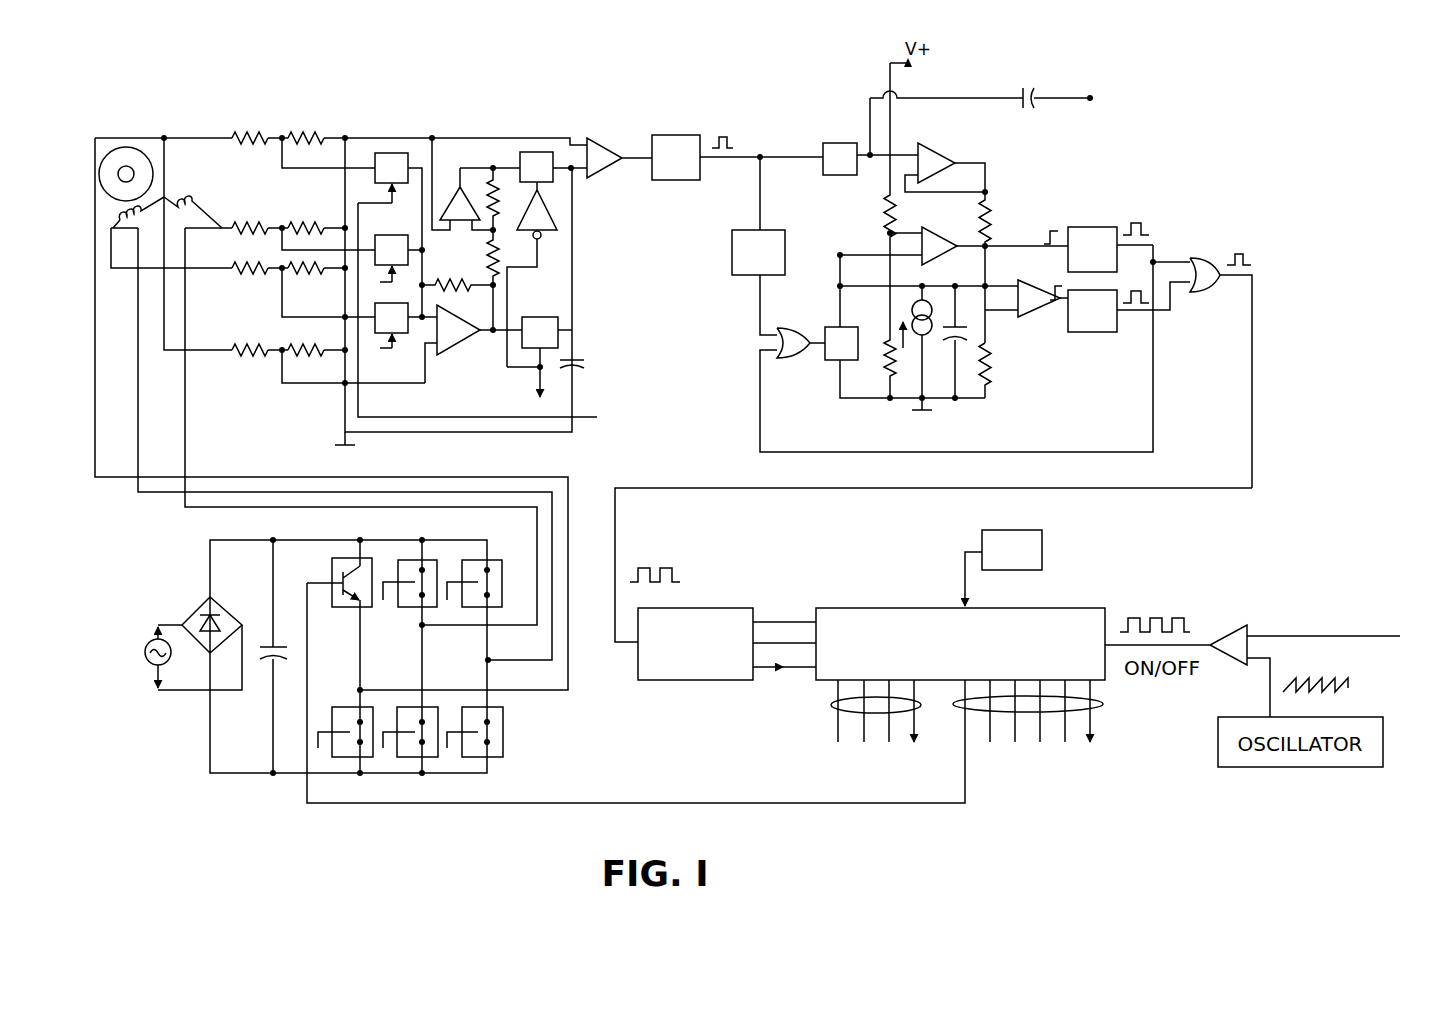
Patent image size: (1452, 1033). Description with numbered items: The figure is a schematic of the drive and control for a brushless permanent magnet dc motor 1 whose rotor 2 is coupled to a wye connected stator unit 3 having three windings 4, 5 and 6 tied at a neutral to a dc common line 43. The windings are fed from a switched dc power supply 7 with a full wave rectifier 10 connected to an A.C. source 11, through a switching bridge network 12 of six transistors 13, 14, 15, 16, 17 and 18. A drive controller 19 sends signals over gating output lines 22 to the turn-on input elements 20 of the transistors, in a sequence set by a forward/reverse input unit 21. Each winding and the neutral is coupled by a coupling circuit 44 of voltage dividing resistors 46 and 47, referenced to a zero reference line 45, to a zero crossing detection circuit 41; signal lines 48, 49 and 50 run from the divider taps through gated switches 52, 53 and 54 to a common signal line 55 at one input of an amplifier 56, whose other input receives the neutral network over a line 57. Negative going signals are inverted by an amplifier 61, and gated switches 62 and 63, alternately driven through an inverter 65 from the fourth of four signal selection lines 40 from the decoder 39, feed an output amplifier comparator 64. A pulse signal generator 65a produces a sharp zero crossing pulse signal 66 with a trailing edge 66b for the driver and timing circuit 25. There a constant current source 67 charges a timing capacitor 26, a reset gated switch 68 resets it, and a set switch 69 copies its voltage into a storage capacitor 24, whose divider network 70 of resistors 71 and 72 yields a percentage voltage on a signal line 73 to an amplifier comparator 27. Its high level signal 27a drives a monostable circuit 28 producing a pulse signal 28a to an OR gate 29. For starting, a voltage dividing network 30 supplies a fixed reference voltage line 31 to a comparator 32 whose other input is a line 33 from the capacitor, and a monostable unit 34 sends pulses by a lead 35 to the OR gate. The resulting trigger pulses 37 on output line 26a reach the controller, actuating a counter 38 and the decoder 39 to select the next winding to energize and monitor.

The permanent magnet dc motor 1 is at (165, 128).
The rotor 2 is at (110, 178).
The stator unit 3 is at (112, 209).
The winding 4 is at (166, 182).
The winding 5 is at (222, 226).
The winding 6 is at (118, 222).
The dc power supply 7 is at (188, 582).
The full wave rectifier 10 is at (229, 612).
The A.C. source 11 is at (146, 660).
The switching bridge network 12 is at (297, 694).
The solid state switch 13 is at (346, 607).
The solid state switch 14 is at (405, 558).
The solid state switch 15 is at (471, 558).
The solid state switch 16 is at (341, 760).
The solid state switch 17 is at (406, 760).
The solid state switch 18 is at (466, 760).
The drive controller 19 is at (905, 555).
The turn-on input element 20 is at (334, 579).
The forward/reverse input unit 21 is at (1045, 561).
The gating output lines 22 is at (320, 730).
The storage capacitor 24 is at (1023, 90).
The driver and timing circuit 25 is at (1013, 222).
The storage capacitor 26 is at (945, 337).
The output line 26a is at (1032, 488).
The amplifier comparator 27 is at (1020, 284).
The high level signal 27a is at (1062, 301).
The monostable circuit 28 is at (1108, 332).
The pulse signal 28a is at (1173, 299).
The OR gate 29 is at (1202, 256).
The voltage dividing network 30 is at (889, 252).
The fixed reference voltage line 31 is at (904, 227).
The amplifier comparator 32 is at (930, 228).
The line 33 is at (866, 258).
The monostable unit 34 is at (1093, 227).
The lead 35 is at (1160, 260).
The trigger pulses 37 is at (1248, 266).
The counter 38 is at (707, 612).
The circuit decoder 39 is at (913, 612).
The signal selection lines 40 is at (546, 377).
The zero crossing detection circuit 41 is at (270, 386).
The dc common or reference line 43 is at (196, 352).
The coupling circuit 44 is at (272, 226).
The zero reference line 45 is at (345, 433).
The voltage dividing resistor 46 is at (315, 135).
The voltage dividing resistor 47 is at (240, 135).
The signal line 48 is at (283, 170).
The signal line 49 is at (279, 240).
The signal line 50 is at (285, 317).
The gated switch 52 is at (375, 160).
The gated switch 53 is at (378, 238).
The gated switch 54 is at (405, 336).
The common signal line 55 is at (427, 282).
The amplifier 56 is at (445, 352).
The line 57 is at (298, 385).
The amplifier 61 is at (449, 200).
The gated switch 62 is at (546, 317).
The gated switch 63 is at (555, 184).
The output amplifier comparator 64 is at (609, 142).
The inverter 65 is at (557, 233).
The pulse signal generator 65a is at (685, 150).
The zero crossing pulse signal 66 is at (731, 145).
The trailing edge 66b is at (755, 226).
The constant current source 67 is at (915, 378).
The reset gated switch 68 is at (800, 355).
The set switch 69 is at (833, 176).
The voltage divider network 70 is at (987, 349).
The first resistor 71 is at (990, 196).
The second resistor 72 is at (988, 376).
The signal line 73 is at (988, 312).